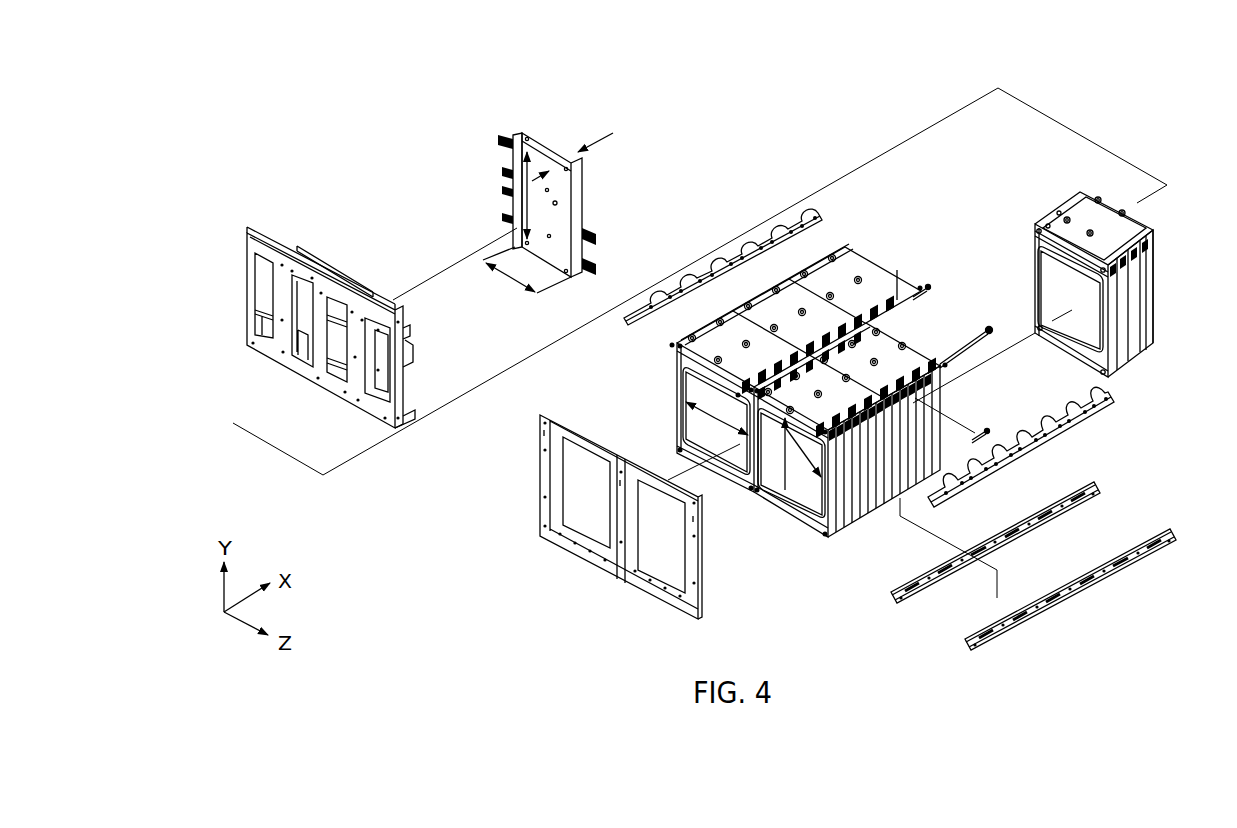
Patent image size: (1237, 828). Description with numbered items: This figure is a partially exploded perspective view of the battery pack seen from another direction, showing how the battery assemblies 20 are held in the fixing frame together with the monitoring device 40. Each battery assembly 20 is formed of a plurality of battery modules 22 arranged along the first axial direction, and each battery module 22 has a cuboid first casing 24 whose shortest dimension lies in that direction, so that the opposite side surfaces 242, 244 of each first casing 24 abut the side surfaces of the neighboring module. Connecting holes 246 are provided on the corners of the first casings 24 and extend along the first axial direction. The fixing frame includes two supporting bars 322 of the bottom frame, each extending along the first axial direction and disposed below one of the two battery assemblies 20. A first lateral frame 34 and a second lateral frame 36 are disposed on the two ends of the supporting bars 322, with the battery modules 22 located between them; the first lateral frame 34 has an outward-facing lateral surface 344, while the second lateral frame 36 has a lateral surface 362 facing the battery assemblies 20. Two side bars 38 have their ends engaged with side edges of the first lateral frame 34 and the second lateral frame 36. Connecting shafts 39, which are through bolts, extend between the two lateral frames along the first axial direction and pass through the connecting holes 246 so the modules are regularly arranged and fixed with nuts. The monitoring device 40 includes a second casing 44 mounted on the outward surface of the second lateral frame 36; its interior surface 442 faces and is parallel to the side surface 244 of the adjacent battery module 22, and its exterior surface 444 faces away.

The battery assembly 20 is at (909, 364).
The battery module 22 is at (870, 497).
The first casing 24 is at (1122, 245).
The side surface 242 is at (703, 427).
The side surface 244 is at (1155, 328).
The connecting hole 246 is at (1028, 366).
The first lateral frame 34 is at (586, 538).
The lateral surface 344 is at (558, 510).
The second lateral frame 36 is at (306, 300).
The lateral surface 362 is at (273, 348).
The side bar 38 is at (820, 215).
The connecting shaft 39 is at (967, 336).
The monitoring device 40 is at (583, 166).
The second casing 44 is at (547, 152).
The interior surface 442 is at (557, 204).
The exterior surface 444 is at (585, 180).
The supporting bar 322 is at (1097, 483).